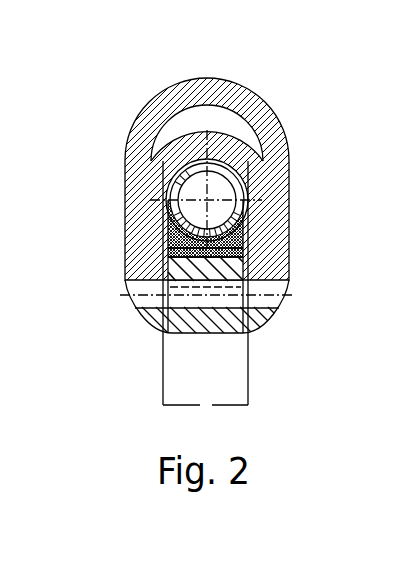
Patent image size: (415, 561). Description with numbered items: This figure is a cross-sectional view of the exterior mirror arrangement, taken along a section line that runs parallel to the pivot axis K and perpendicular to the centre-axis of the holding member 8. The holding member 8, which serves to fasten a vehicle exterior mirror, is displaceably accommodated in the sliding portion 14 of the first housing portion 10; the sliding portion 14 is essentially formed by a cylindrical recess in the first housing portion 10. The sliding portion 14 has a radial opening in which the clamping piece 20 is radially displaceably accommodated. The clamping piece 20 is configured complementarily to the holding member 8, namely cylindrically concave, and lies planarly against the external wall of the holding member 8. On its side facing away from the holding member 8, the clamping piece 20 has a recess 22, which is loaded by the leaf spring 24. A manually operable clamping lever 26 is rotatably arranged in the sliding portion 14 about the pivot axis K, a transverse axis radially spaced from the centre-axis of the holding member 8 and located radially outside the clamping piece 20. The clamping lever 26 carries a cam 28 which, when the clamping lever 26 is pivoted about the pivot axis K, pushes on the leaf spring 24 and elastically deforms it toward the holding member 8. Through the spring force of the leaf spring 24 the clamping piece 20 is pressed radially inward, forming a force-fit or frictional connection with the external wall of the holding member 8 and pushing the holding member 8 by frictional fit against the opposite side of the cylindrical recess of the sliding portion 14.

The holding member 8 is at (247, 212).
The first housing portion 10 is at (269, 111).
The sliding portion 14 is at (168, 188).
The clamping piece 20 is at (176, 242).
The recess 22 is at (178, 249).
The leaf spring 24 is at (178, 253).
The clamping lever 26 is at (213, 325).
The cam 28 is at (205, 283).
The pivot axis K is at (227, 294).